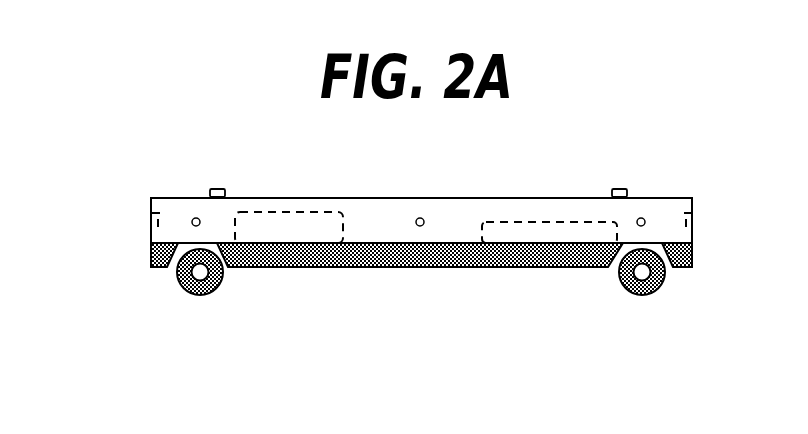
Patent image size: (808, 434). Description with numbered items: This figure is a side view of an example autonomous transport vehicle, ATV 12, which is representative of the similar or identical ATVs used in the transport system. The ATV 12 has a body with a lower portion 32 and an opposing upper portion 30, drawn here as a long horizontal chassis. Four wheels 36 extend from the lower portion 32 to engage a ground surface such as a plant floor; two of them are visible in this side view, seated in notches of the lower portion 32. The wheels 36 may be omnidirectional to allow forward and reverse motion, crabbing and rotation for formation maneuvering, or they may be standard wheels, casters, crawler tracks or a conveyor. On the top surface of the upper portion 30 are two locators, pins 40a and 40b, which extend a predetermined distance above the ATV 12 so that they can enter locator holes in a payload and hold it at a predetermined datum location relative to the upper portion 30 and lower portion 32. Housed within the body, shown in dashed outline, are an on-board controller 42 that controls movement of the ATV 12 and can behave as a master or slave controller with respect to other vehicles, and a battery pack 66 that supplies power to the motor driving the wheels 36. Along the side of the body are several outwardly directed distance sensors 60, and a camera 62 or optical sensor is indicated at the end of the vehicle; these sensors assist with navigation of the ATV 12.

The ATV 12 is at (642, 144).
The upper portion 30 is at (397, 197).
The lower portion 32 is at (325, 268).
The wheels 36 is at (193, 295).
The pin 40a is at (208, 189).
The pin 40b is at (615, 189).
The on-board controller 42 is at (549, 232).
The distance sensors 60 is at (196, 218).
The camera 62 is at (150, 225).
The battery pack 66 is at (289, 227).